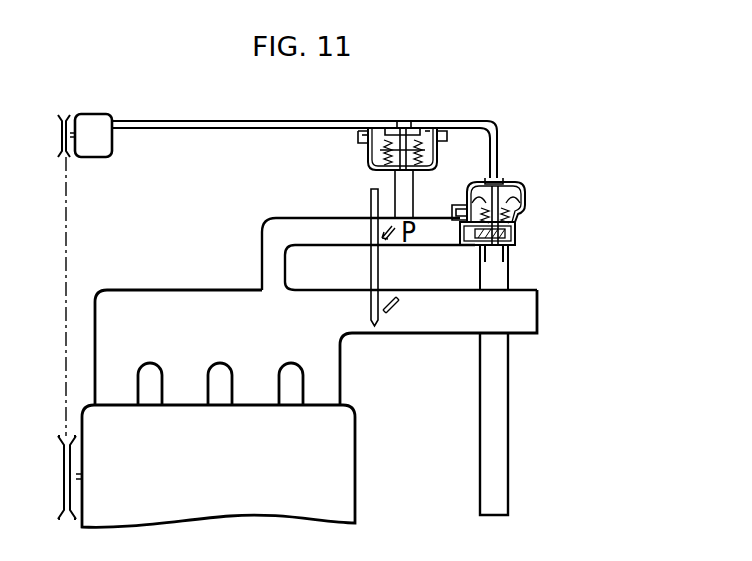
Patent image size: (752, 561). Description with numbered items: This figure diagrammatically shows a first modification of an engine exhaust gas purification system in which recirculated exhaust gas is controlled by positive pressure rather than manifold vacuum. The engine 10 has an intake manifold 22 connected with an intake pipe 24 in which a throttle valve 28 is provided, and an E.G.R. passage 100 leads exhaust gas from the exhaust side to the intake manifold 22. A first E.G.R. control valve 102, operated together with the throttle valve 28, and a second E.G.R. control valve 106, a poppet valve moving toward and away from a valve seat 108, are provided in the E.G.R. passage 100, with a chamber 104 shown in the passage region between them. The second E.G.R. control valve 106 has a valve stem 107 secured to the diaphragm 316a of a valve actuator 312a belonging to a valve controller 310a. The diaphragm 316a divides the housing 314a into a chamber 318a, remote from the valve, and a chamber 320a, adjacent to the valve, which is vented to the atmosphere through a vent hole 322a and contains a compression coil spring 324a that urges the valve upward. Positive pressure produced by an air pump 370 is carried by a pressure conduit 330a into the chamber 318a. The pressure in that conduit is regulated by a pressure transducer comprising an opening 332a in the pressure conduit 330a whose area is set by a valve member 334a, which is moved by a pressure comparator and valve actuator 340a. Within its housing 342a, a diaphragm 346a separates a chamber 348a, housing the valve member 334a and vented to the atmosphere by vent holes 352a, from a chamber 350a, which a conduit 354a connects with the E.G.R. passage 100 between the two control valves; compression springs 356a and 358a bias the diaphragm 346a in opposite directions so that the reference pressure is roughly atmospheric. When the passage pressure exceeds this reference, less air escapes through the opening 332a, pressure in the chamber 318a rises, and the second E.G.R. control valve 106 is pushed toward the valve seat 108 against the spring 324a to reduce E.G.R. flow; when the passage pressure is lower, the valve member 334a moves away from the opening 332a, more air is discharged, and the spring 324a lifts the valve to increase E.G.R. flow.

The internal combustion engine 10 is at (358, 422).
The intake manifold 22 is at (190, 318).
The intake pipe 24 is at (455, 334).
The throttle valve 28 is at (397, 306).
The E.G.R. passage 100 is at (300, 232).
The first E.G.R. control valve 102 is at (389, 240).
The chamber 104 is at (371, 271).
The second E.G.R. control valve 106 is at (510, 262).
The valve stem 107 is at (516, 238).
The valve seat 108 is at (478, 305).
The valve controller 310a is at (562, 61).
The valve actuator 312a is at (535, 196).
The housing 314a is at (527, 196).
The diaphragm 316a is at (487, 184).
The chamber 318a is at (505, 188).
The chamber 320a is at (464, 192).
The vent hole 322a is at (486, 250).
The compression coil spring 324a is at (517, 218).
The pressure conduit 330a is at (219, 120).
The opening 332a is at (400, 125).
The valve member 334a is at (412, 127).
The pressure comparator and valve actuator 340a is at (352, 157).
The housing 342a is at (386, 152).
The diaphragm 346a is at (386, 142).
The chamber 348a is at (368, 136).
The chamber 350a is at (427, 131).
The vent holes 352a is at (376, 138).
The conduit 354a is at (349, 257).
The compression spring 356a is at (421, 146).
The compression spring 358a is at (395, 180).
The air pump 370 is at (96, 118).